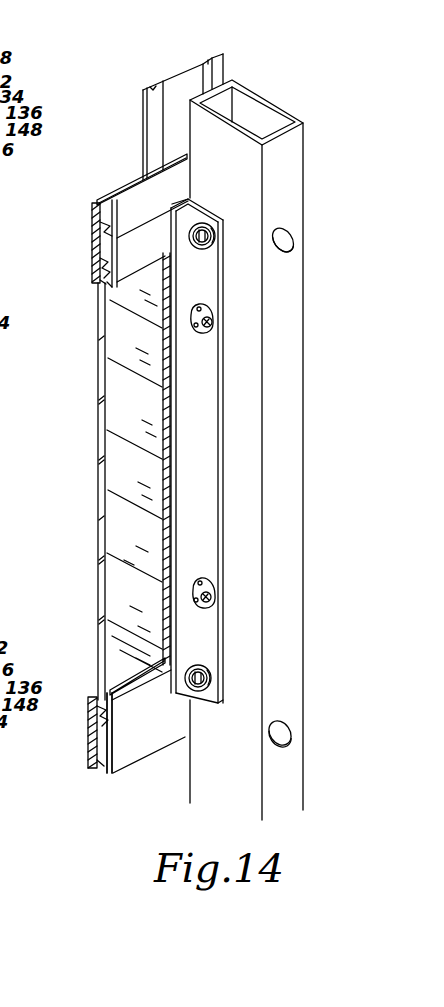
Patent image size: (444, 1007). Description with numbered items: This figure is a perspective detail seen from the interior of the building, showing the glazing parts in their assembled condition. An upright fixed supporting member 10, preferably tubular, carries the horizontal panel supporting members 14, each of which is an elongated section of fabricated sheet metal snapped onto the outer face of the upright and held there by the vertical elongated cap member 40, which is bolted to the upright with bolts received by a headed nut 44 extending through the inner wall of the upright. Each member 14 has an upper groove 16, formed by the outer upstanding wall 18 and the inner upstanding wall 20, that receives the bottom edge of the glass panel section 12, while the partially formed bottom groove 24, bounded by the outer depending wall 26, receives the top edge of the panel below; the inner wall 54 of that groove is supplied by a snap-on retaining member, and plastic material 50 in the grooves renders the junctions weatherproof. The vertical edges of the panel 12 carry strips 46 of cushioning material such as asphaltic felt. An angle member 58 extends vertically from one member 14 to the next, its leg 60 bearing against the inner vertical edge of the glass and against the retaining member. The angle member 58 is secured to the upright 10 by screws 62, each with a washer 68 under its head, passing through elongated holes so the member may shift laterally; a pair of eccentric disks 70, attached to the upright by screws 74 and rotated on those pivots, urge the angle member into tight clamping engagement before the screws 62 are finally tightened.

The upright fixed supporting member 10 is at (292, 148).
The panel section 12 is at (100, 458).
The horizontal panel supporting member 14 is at (86, 241).
The upper groove 16 is at (100, 222).
The outer upstanding wall 18 is at (102, 202).
The inner upstanding wall 20 is at (131, 181).
The bottom groove 24 is at (99, 775).
The outer depending wall 26 is at (97, 283).
The vertical elongated cap member 40 is at (185, 70).
The headed nut 44 is at (296, 231).
The cushioning strip 46 is at (162, 490).
The plastic material 50 is at (100, 264).
The inner wall of the bottom groove 54 is at (112, 285).
The angle member 58 is at (212, 213).
The leg of angle member 60 is at (185, 206).
The screw 62 is at (216, 249).
The washer 68 is at (204, 251).
The eccentric disk 70 is at (208, 311).
The screw 74 is at (213, 332).